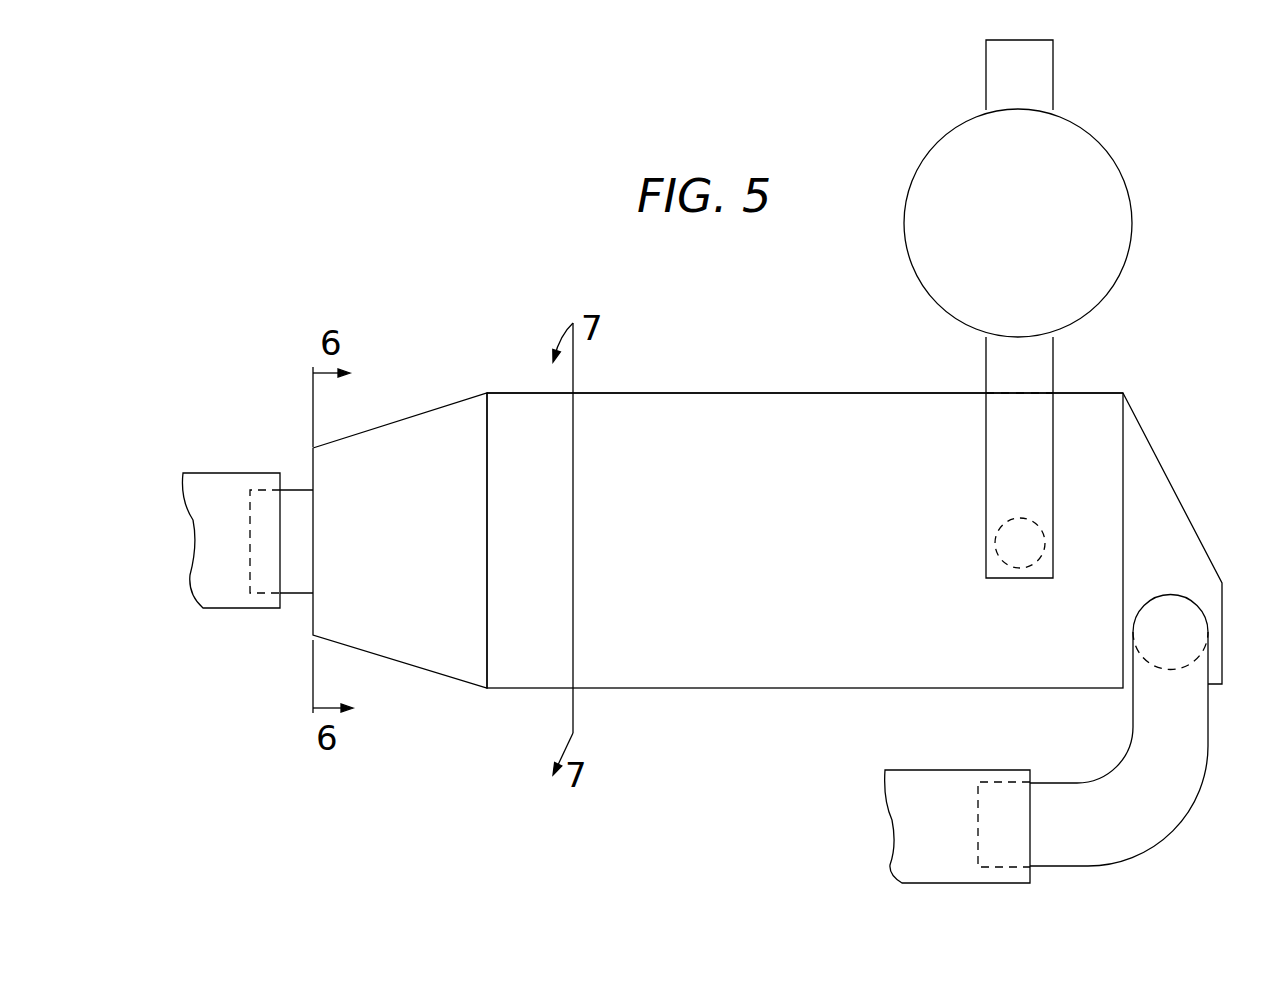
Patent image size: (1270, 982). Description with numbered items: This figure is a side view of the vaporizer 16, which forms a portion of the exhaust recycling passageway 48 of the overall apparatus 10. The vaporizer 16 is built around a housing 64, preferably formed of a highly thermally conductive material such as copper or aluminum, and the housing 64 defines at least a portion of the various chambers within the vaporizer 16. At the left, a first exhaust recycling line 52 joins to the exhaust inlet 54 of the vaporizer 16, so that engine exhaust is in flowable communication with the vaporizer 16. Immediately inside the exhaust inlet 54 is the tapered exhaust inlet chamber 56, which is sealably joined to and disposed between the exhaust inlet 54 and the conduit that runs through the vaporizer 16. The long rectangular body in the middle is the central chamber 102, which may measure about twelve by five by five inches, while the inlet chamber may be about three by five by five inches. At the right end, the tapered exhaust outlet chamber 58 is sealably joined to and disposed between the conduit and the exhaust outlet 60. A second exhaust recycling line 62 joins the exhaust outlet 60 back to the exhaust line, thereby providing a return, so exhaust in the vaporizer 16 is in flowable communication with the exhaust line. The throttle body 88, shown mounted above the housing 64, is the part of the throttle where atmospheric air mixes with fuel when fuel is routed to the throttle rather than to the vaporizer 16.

The apparatus 10 is at (843, 248).
The vaporizer 16 is at (810, 362).
The recycling passageway 48 is at (1157, 812).
The first exhaust recycling line 52 is at (200, 483).
The exhaust inlet 54 is at (248, 517).
The exhaust inlet chamber 56 is at (374, 427).
The exhaust outlet chamber 58 is at (1153, 492).
The exhaust outlet 60 is at (1180, 628).
The second exhaust recycling line 62 is at (912, 804).
The housing 64 is at (432, 410).
The throttle body 88 is at (1036, 238).
The central chamber 102 is at (778, 547).